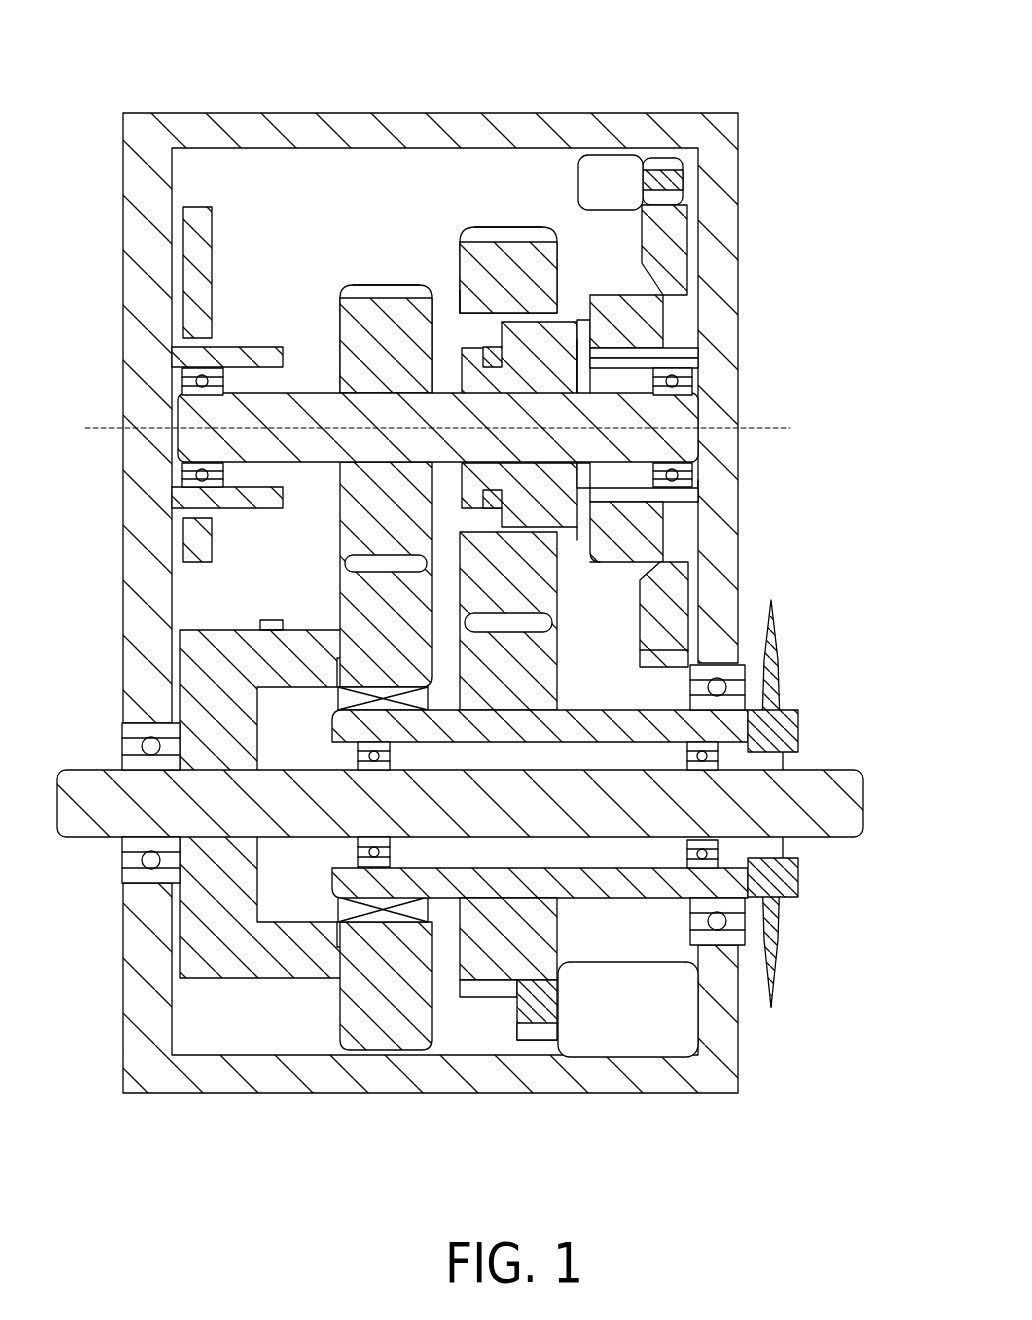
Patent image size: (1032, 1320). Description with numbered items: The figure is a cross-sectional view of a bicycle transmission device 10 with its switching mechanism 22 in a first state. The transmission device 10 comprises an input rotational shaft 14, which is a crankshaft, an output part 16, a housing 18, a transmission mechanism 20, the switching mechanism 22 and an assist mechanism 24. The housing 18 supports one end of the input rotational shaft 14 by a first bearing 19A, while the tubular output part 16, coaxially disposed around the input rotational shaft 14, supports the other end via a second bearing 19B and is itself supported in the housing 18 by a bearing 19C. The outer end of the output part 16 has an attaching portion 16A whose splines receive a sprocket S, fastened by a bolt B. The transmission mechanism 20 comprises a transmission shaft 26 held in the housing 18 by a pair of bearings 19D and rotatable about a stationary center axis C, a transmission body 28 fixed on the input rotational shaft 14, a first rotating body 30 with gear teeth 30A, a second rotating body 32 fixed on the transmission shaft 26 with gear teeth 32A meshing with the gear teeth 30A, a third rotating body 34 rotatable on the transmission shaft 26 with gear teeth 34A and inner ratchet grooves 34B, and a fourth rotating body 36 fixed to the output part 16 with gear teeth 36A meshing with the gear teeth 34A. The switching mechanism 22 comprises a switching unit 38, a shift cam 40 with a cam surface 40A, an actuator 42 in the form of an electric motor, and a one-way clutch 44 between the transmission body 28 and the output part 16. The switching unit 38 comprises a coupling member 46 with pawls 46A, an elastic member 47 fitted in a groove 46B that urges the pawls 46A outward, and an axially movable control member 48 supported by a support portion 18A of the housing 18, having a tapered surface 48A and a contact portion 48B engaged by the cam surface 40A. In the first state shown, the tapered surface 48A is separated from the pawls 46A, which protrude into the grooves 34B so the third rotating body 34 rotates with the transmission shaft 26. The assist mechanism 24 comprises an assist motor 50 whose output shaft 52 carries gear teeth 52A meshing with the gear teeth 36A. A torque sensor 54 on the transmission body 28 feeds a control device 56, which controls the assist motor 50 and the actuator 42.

The bicycle transmission device 10 is at (720, 70).
The input rotational shaft 14 is at (830, 768).
The output part 16 is at (772, 690).
The attaching portion 16A is at (775, 712).
The housing 18 is at (740, 150).
The support portion 18A is at (738, 490).
The first bearing 19A is at (122, 736).
The second bearing 19B is at (720, 848).
The bearing 19C is at (735, 668).
The bearings 19D is at (180, 380).
The transmission mechanism 20 is at (412, 226).
The switching mechanism 22 is at (568, 172).
The assist mechanism 24 is at (632, 1105).
The transmission shaft 26 is at (306, 392).
The transmission body 28 is at (215, 628).
The first rotating body 30 is at (340, 605).
The gear teeth 30A is at (340, 1045).
The second rotating body 32 is at (340, 310).
The gear teeth 32A is at (385, 283).
The third rotating body 34 is at (557, 252).
The gear teeth 34A is at (518, 226).
The grooves 34B is at (455, 325).
The fourth rotating body 36 is at (557, 690).
The gear teeth 36A is at (470, 990).
The switching unit 38 is at (599, 612).
The shift cam 40 is at (688, 205).
The cam surface 40A is at (690, 572).
The actuator 42 is at (602, 152).
The one-way clutch 44 is at (340, 700).
The coupling member 46 is at (577, 477).
The pawls 46A is at (578, 545).
The groove 46B is at (486, 357).
The elastic member 47 is at (485, 500).
The control member 48 is at (665, 522).
The tapered surface 48A is at (580, 340).
The contact portion 48B is at (665, 330).
The assist motor 50 is at (596, 960).
The output shaft 52 is at (522, 1042).
The gear teeth 52A is at (540, 1045).
The torque sensor 54 is at (268, 620).
The control device 56 is at (212, 226).
The bolt B is at (798, 876).
The center axis C is at (790, 420).
The sprocket S is at (782, 930).